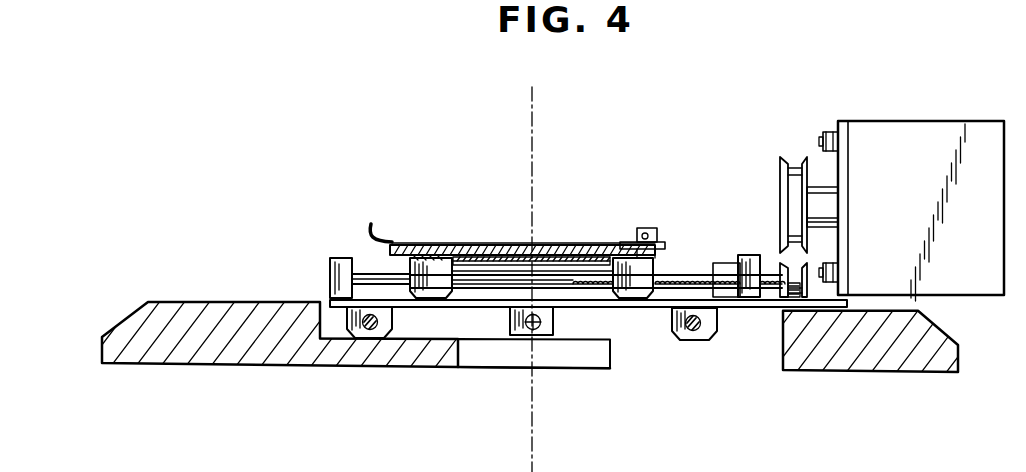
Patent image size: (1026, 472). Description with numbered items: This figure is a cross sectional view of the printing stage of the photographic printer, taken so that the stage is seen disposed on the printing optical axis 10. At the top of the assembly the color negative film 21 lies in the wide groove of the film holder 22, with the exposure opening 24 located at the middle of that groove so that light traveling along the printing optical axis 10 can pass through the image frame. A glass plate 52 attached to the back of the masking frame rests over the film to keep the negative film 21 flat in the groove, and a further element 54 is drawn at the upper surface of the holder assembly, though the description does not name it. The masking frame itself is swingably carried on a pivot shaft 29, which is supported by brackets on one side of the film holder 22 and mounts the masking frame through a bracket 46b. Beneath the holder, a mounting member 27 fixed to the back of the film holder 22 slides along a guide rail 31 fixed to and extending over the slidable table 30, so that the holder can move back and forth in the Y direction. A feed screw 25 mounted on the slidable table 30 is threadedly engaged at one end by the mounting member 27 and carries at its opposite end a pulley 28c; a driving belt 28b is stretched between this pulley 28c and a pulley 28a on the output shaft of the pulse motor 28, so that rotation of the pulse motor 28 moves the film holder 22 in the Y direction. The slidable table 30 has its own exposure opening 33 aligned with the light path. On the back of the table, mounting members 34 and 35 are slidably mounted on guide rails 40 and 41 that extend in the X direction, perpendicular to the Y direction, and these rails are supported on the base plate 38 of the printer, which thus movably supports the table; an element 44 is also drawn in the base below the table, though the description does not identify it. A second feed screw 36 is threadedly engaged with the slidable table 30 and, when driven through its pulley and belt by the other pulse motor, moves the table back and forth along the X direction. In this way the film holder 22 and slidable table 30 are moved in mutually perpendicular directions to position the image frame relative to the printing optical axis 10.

The printing optical axis 10 is at (533, 102).
The color negative film 21 is at (512, 245).
The film holder 22 is at (440, 256).
The exposure opening 24 is at (583, 272).
The feed screw 25 is at (690, 276).
The mounting member 27 is at (422, 258).
The pulse motor 28 is at (918, 132).
The pulley 28a is at (807, 173).
The driving belt 28b is at (790, 207).
The pulley 28c is at (805, 276).
The pivot shaft 29 is at (645, 228).
The slidable table 30 is at (430, 308).
The guide rail 31 is at (360, 273).
The exposure opening 33 is at (600, 308).
The mounting member 34 is at (383, 341).
The mounting member 35 is at (708, 341).
The feed screw 36 is at (528, 331).
The base plate 38 is at (845, 356).
The guide rail 40 is at (368, 332).
The guide rail 41 is at (693, 332).
The insert block 44 is at (607, 360).
The bracket 46b is at (655, 232).
The glass plate 52 is at (477, 258).
The top surface 54 is at (550, 245).